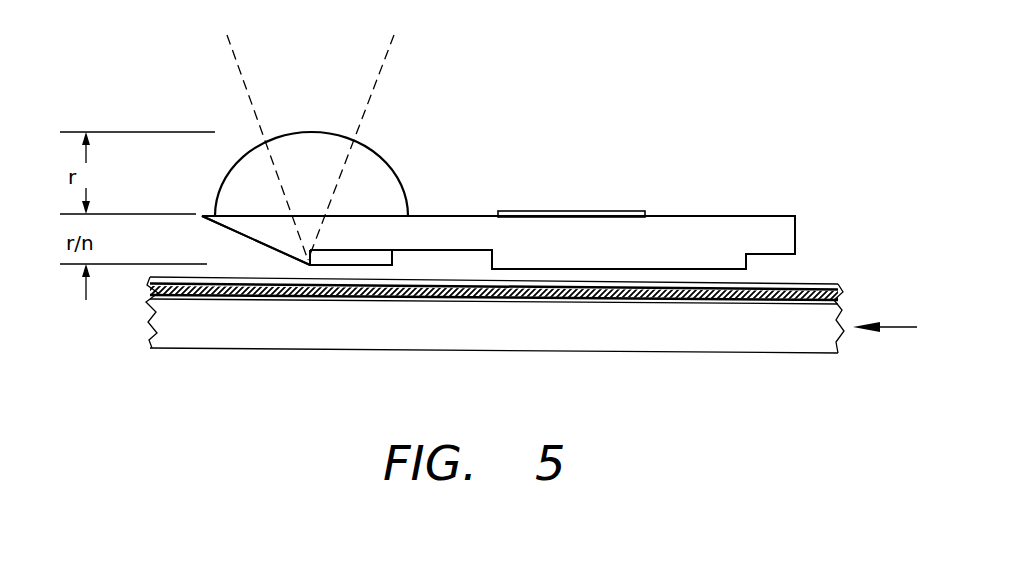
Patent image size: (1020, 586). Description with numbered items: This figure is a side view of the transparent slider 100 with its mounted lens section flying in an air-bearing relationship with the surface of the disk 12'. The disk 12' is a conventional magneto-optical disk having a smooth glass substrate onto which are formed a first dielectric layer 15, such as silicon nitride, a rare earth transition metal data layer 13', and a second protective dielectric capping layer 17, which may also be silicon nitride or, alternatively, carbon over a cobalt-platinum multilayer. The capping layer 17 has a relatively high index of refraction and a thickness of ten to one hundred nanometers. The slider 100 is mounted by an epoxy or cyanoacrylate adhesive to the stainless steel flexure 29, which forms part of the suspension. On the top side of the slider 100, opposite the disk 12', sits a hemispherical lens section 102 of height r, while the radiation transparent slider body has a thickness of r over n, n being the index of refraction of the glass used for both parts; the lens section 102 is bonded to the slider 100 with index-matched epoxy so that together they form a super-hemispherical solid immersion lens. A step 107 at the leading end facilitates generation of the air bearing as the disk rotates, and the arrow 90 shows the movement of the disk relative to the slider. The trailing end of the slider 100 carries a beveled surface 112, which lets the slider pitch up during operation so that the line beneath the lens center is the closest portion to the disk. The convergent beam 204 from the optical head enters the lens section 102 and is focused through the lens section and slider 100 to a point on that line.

The convergent beam 204 is at (386, 67).
The hemispherical lens section 102 is at (396, 178).
The slider 100 is at (745, 216).
The beveled surface 112 is at (250, 238).
The flexure 29 is at (611, 209).
The step 107 is at (782, 257).
The capping layer 17 is at (150, 280).
The data layer 13' is at (526, 288).
The disk 12' is at (497, 341).
The first dielectric layer 15 is at (146, 300).
The arrow 90 is at (900, 329).